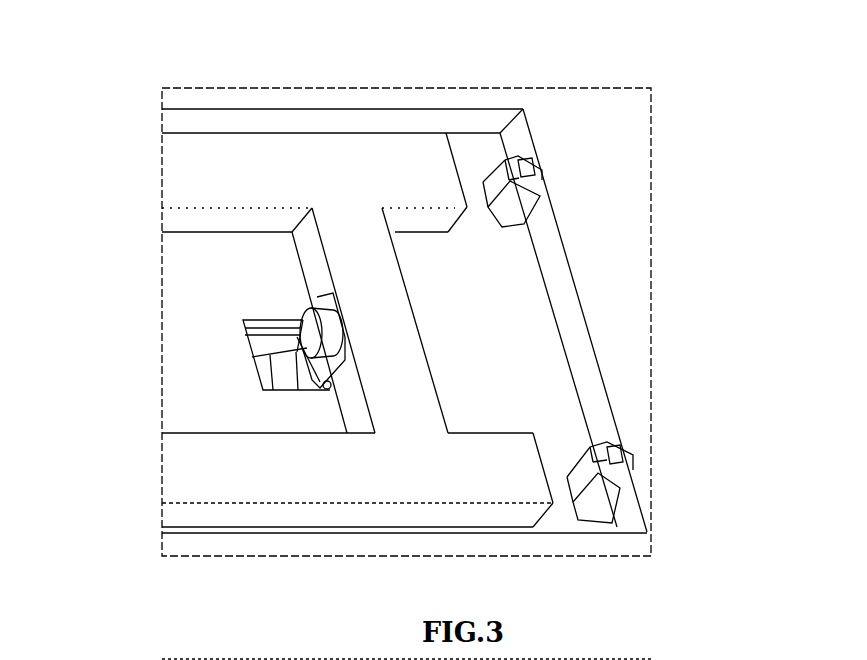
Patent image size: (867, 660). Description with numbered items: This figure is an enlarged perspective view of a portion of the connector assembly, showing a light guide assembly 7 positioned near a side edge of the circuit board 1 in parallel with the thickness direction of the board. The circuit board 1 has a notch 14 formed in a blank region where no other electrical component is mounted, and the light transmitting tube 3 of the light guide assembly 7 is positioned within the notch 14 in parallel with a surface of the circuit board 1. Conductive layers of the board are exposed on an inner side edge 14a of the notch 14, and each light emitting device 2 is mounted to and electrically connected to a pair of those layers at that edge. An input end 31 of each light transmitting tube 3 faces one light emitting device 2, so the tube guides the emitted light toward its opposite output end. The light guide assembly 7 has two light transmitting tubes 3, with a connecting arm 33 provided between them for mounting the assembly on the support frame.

The circuit board 1 is at (637, 207).
The light emitting device 2 is at (518, 207).
The light transmitting tube 3 is at (276, 165).
The light guide assembly 7 is at (205, 175).
The notch 14 is at (535, 378).
The inner side edge of the notch 14a is at (578, 348).
The input end 31 is at (450, 163).
The connecting arm 33 is at (398, 380).